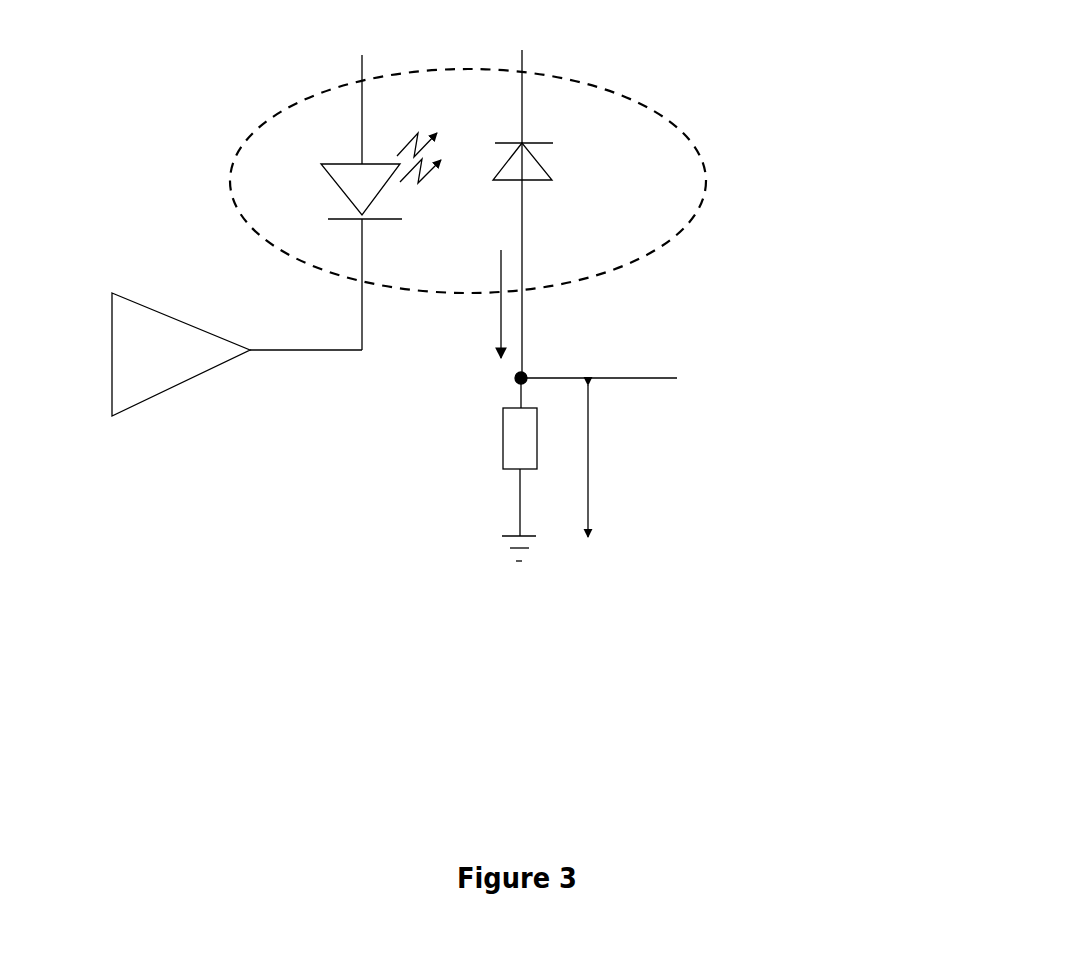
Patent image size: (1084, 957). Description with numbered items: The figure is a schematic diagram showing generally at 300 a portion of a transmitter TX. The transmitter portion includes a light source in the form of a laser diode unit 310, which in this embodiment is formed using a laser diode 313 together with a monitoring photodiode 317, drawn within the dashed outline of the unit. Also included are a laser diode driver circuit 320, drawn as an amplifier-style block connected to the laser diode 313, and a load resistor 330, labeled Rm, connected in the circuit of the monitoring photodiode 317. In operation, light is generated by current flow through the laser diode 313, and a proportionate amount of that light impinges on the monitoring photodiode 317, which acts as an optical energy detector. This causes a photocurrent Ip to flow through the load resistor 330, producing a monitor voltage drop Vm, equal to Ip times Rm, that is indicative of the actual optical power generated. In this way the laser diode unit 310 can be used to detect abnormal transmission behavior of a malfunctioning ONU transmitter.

The portion of a transmitter 300 is at (782, 470).
The laser diode unit 310 is at (703, 166).
The laser diode 313 is at (348, 160).
The monitoring photodiode 317 is at (548, 148).
The laser diode driver circuit 320 is at (137, 297).
The load resistor 330 is at (502, 458).